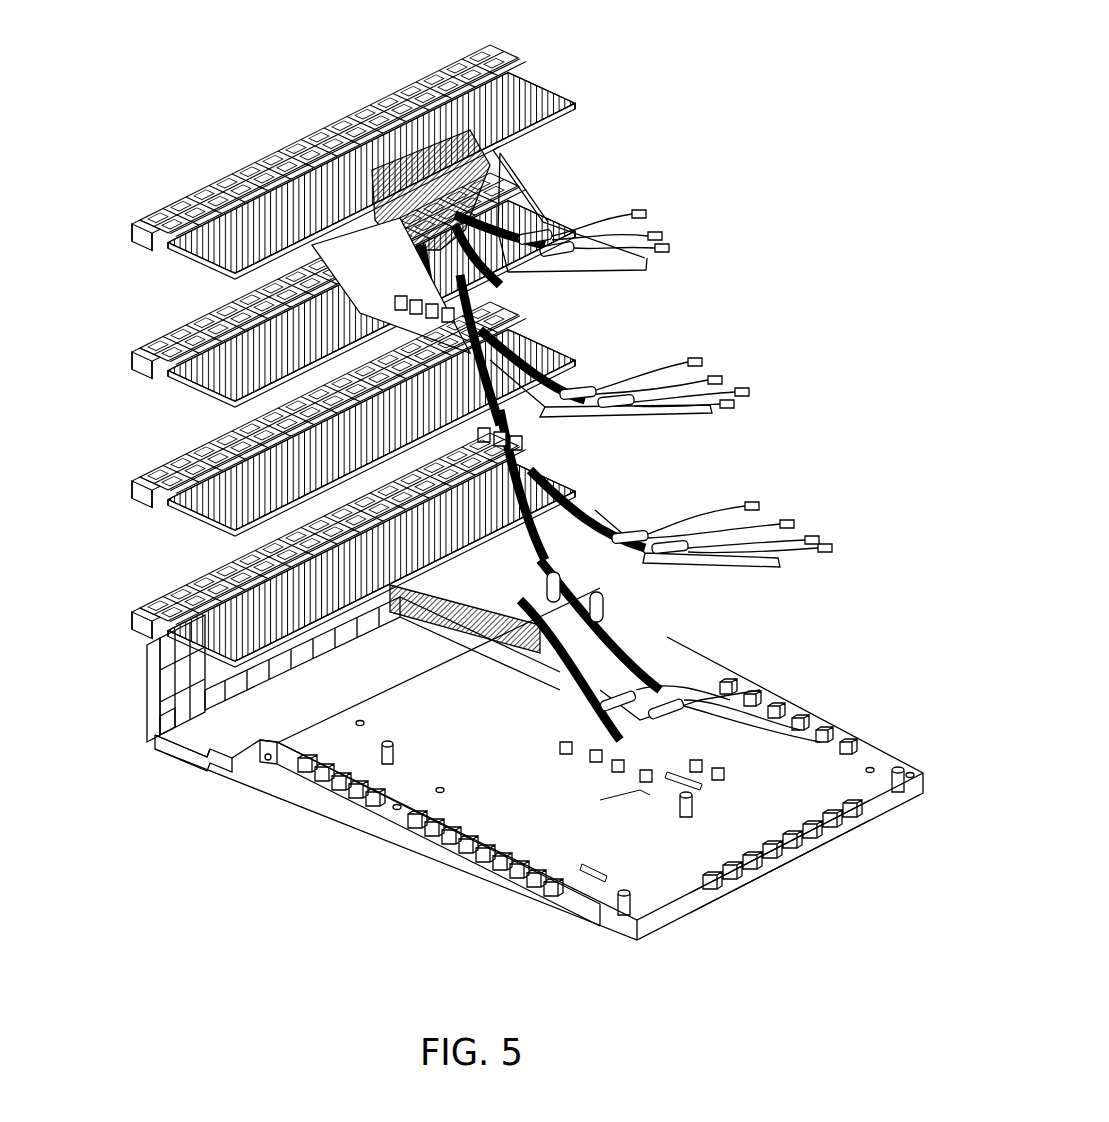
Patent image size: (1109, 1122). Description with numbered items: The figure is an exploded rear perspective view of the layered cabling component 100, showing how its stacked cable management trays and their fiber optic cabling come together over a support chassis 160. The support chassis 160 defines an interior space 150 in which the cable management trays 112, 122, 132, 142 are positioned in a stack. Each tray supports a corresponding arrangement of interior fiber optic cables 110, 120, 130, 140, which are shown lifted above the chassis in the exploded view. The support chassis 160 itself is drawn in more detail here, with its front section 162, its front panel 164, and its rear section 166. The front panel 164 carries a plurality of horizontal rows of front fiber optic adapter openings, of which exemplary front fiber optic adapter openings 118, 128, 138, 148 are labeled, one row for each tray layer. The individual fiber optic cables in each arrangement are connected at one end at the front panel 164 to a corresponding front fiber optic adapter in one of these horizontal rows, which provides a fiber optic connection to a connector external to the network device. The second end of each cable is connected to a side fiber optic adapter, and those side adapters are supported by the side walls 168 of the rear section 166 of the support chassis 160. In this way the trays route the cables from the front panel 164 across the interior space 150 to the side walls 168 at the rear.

The layered cabling component 100 is at (706, 55).
The arrangement of interior fiber optic cables 110 is at (272, 545).
The cable management tray 112 is at (778, 697).
The front fiber optic adapter opening 118 is at (190, 740).
The arrangement of interior fiber optic cables 120 is at (312, 400).
The cable management tray 122 is at (768, 573).
The front fiber optic adapter opening 128 is at (160, 716).
The arrangement of interior fiber optic cables 130 is at (230, 303).
The cable management tray 132 is at (692, 440).
The front fiber optic adapter opening 138 is at (150, 690).
The arrangement of interior fiber optic cables 140 is at (352, 112).
The cable management tray 142 is at (621, 283).
The front fiber optic adapter opening 148 is at (150, 663).
The interior space 150 is at (385, 688).
The support chassis 160 is at (383, 843).
The front section 162 is at (212, 727).
The front panel 164 is at (150, 636).
The rear section 166 is at (640, 862).
The side walls 168 is at (893, 745).